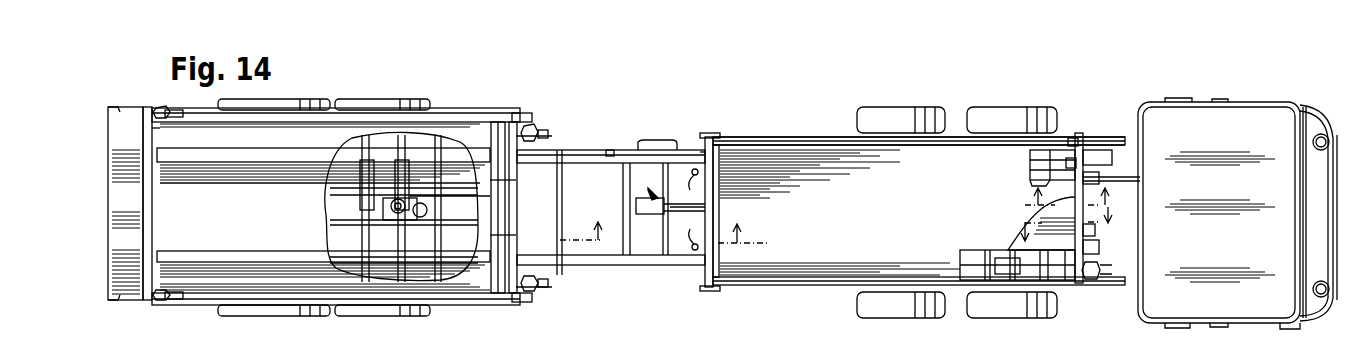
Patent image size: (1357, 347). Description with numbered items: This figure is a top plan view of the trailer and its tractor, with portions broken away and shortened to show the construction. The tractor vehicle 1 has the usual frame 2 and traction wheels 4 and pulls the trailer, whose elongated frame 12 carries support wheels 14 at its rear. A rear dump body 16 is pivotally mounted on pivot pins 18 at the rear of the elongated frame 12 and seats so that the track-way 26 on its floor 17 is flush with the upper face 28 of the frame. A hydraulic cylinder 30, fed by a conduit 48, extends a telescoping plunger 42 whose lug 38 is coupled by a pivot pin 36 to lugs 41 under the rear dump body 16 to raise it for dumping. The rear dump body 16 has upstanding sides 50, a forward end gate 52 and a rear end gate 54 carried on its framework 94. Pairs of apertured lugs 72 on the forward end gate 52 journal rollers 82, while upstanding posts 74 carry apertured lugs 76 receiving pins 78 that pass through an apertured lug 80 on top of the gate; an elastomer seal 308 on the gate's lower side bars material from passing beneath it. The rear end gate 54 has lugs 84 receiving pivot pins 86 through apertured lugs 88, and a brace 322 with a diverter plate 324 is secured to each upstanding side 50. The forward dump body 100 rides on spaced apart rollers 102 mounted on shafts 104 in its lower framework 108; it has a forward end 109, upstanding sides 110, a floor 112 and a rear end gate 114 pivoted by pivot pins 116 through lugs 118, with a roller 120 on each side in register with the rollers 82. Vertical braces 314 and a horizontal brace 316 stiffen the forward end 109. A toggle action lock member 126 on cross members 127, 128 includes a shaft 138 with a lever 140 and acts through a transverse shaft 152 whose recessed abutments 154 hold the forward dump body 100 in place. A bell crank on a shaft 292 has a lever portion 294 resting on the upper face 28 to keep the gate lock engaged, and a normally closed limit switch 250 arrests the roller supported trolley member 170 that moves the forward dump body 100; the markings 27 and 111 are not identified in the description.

The tractor vehicle 1 is at (1140, 108).
The frame 2 is at (1122, 177).
The traction wheels 4 is at (985, 115).
The elongated frame 12 is at (600, 152).
The support wheels 14 is at (345, 104).
The rear dump body 16 is at (428, 100).
The floor 17 is at (194, 210).
The pivot pins 18 is at (670, 238).
The track-way 26 is at (276, 183).
The section line 27 is at (1055, 224).
The upper face 28 is at (706, 135).
The hydraulic cylinder 30 is at (422, 222).
The pivot pin 36 is at (384, 226).
The lug 38 is at (366, 188).
The lugs 41 is at (398, 200).
The telescoping plunger 42 is at (436, 204).
The conduit 48 is at (462, 198).
The upstanding sides 50 is at (282, 124).
The forward end gate 52 is at (506, 190).
The rear end gate 54 is at (160, 130).
The apertured lugs 72 is at (536, 131).
The upstanding posts 74 is at (512, 120).
The apertured lug 76 is at (497, 120).
The pin 78 is at (528, 113).
The apertured lug 80 is at (494, 283).
The rollers 82 is at (548, 133).
The lug 84 is at (172, 110).
The pivot pins 86 is at (160, 110).
The apertured lugs 88 is at (150, 117).
The framework 94 is at (360, 168).
The forward dump body 100 is at (840, 133).
The spaced apart rollers 102 is at (638, 140).
The shafts 104 is at (1006, 252).
The lower framework 108 is at (1072, 158).
The forward end 109 is at (1078, 138).
The upstanding sides 110 is at (788, 136).
The rail flange 111 is at (803, 136).
The floor 112 is at (878, 226).
The rear end gate 114 is at (704, 152).
The pivot pins 116 is at (716, 134).
The lugs 118 is at (712, 132).
The roller 120 is at (720, 138).
The toggle action lock member 126 is at (640, 193).
The cross member 127 is at (1085, 214).
The cross member 128 is at (626, 208).
The shaft 138 is at (632, 180).
The lever 140 is at (658, 140).
The shaft 152 is at (720, 200).
The recessed abutments 154 is at (688, 209).
The roller supported trolley member 170 is at (1096, 281).
The normally closed limit switch 250 is at (1096, 231).
The shaft 292 is at (1076, 133).
The lever portion 294 is at (1030, 168).
The elastomer seal 308 is at (510, 240).
The vertical braces 314 is at (1100, 180).
The horizontal brace 316 is at (1030, 212).
The brace 322 is at (110, 106).
The diverter plate 324 is at (138, 210).